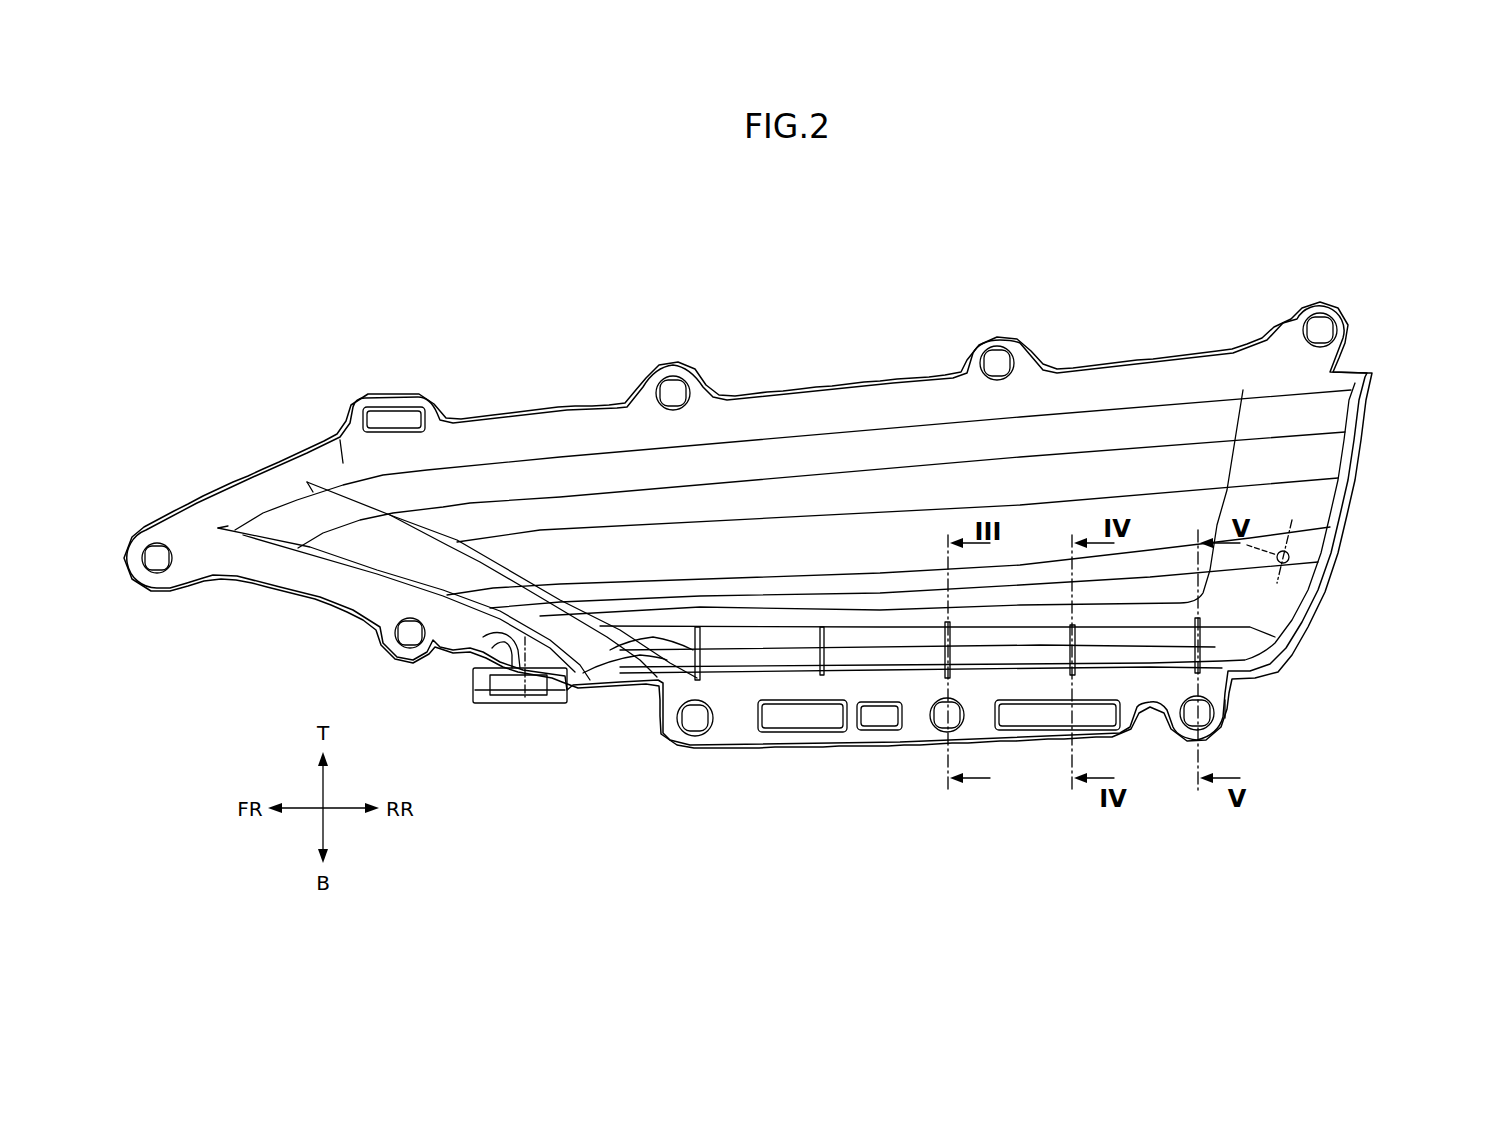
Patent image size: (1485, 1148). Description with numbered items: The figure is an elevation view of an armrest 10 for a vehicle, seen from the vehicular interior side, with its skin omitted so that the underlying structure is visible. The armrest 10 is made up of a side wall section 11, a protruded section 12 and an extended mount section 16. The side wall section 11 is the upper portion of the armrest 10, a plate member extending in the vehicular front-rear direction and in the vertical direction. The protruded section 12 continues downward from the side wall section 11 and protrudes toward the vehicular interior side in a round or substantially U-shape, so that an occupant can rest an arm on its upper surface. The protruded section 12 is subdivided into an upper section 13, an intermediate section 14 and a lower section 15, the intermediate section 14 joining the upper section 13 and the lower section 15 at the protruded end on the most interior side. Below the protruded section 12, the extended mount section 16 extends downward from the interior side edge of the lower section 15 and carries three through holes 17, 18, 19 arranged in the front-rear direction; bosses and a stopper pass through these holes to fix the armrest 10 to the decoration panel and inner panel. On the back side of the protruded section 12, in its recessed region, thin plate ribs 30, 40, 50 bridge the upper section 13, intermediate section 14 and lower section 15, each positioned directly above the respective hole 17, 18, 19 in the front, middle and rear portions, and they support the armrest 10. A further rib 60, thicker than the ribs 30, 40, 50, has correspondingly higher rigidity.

The armrest 10 is at (868, 283).
The side wall section 11 is at (1310, 460).
The protruded section 12 is at (1396, 580).
The upper section 13 is at (1233, 603).
The intermediate section 14 is at (1225, 650).
The lower section 15 is at (1228, 672).
The extended mount section 16 is at (1220, 715).
The hole 17 is at (948, 722).
The hole 18 is at (1000, 722).
The hole 19 is at (1205, 720).
The rib 30 is at (937, 637).
The rib 40 is at (1067, 640).
The rib 50 is at (1192, 637).
The rib 60 is at (693, 640).